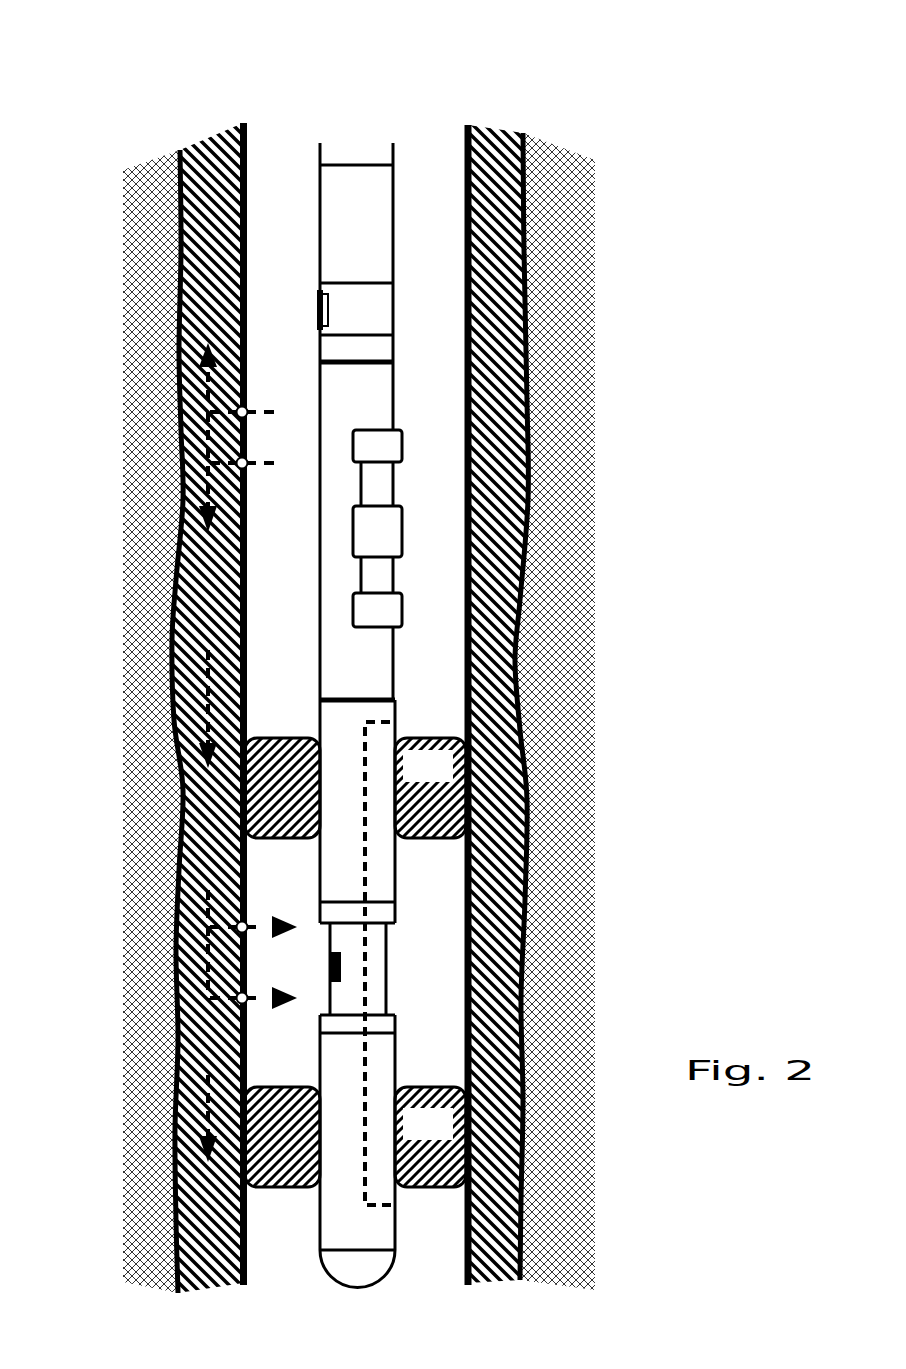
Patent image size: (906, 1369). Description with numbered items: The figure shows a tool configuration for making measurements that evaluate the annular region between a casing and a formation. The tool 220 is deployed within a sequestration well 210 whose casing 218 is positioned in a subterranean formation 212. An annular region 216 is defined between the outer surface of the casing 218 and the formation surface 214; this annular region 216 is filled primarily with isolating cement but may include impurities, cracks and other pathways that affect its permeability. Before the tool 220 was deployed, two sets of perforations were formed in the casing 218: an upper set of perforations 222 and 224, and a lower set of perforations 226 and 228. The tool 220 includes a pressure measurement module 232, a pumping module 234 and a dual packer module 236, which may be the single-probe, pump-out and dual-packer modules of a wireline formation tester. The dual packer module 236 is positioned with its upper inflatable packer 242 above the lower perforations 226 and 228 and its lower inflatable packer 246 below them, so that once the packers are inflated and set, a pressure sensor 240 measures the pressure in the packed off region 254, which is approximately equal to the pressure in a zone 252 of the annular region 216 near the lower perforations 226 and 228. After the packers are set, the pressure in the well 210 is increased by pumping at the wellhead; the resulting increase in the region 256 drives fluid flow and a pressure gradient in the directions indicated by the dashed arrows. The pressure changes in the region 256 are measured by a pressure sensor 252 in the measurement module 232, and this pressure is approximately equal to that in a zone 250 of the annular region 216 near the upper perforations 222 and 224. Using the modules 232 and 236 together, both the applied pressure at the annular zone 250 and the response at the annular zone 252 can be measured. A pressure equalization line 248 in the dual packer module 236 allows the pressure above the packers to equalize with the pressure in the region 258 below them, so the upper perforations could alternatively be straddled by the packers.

The sequestration well 210 is at (250, 91).
The subterranean formation 212 is at (585, 348).
The formation surface 214 is at (525, 475).
The annular region 216 is at (190, 616).
The casing 218 is at (475, 618).
The tool 220 is at (394, 110).
The perforation 222 is at (247, 409).
The perforation 224 is at (247, 467).
The perforation 226 is at (246, 925).
The perforation 228 is at (246, 1002).
The pressure measurement module 232 is at (375, 210).
The pumping module 234 is at (375, 418).
The dual packer module 236 is at (372, 800).
The pressure sensor 240 is at (329, 968).
The upper inflatable packer 242 is at (450, 780).
The lower inflatable packer 246 is at (450, 1138).
The pressure equalization line 248 is at (364, 1205).
The zone 250 is at (117, 378).
The zone / pressure sensor 252 is at (316, 305).
The packed off region 254 is at (450, 982).
The region 256 is at (454, 357).
The region 258 is at (304, 1258).